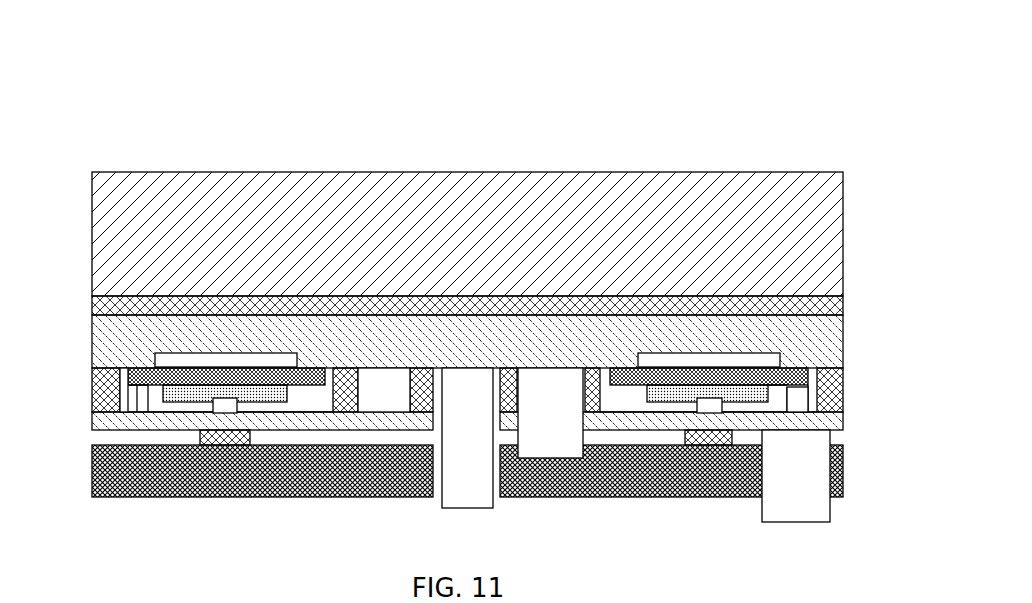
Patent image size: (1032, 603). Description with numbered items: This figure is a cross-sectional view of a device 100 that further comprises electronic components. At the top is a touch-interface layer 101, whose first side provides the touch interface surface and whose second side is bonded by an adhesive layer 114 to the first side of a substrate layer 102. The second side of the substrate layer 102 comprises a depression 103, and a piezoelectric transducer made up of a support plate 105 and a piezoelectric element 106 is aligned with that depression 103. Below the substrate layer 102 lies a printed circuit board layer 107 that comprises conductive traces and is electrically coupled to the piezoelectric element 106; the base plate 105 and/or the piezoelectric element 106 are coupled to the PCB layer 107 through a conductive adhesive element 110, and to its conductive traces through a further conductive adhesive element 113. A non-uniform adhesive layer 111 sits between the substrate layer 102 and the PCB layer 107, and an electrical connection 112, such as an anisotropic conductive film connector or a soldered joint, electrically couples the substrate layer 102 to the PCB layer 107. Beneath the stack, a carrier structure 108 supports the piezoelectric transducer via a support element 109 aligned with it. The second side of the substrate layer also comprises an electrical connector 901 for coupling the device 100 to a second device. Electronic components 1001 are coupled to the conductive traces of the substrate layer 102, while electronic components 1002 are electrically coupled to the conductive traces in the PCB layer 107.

The device 100 is at (132, 124).
The touch-interface layer 101 is at (95, 222).
The adhesive layer 114 is at (95, 312).
The substrate layer 102 is at (95, 344).
The depression 103 is at (773, 362).
The support plate 105 is at (765, 392).
The piezoelectric element 106 is at (807, 372).
The printed circuit board layer 107 is at (95, 436).
The carrier structure 108 is at (95, 484).
The support element 109 is at (220, 433).
The conductive adhesive element 110 is at (225, 413).
The adhesive layer 111 is at (95, 383).
The electrical connection 112 is at (380, 408).
The conductive adhesive element 113 is at (131, 393).
The electrical connector 901 is at (466, 497).
The electronic components 1001 is at (545, 458).
The electronic components 1002 is at (800, 512).